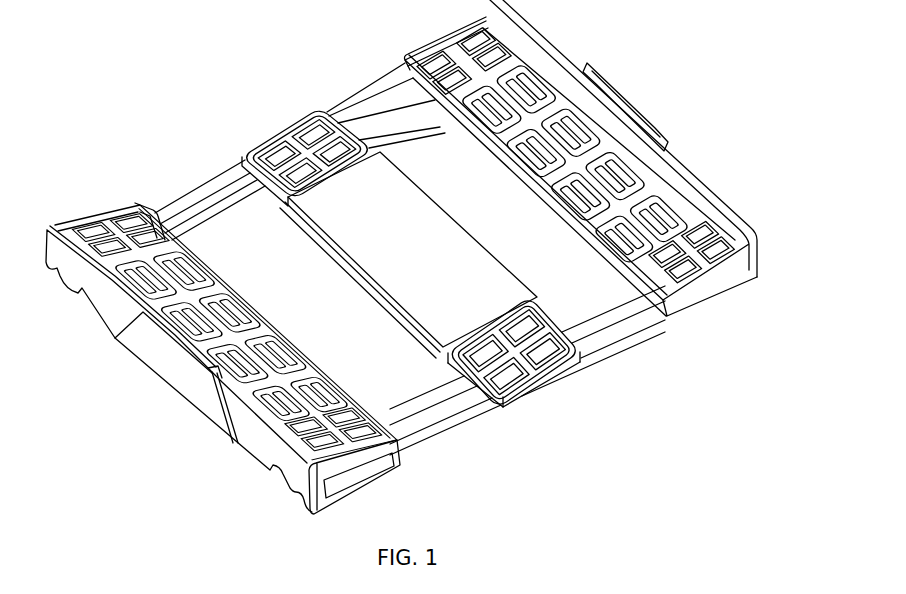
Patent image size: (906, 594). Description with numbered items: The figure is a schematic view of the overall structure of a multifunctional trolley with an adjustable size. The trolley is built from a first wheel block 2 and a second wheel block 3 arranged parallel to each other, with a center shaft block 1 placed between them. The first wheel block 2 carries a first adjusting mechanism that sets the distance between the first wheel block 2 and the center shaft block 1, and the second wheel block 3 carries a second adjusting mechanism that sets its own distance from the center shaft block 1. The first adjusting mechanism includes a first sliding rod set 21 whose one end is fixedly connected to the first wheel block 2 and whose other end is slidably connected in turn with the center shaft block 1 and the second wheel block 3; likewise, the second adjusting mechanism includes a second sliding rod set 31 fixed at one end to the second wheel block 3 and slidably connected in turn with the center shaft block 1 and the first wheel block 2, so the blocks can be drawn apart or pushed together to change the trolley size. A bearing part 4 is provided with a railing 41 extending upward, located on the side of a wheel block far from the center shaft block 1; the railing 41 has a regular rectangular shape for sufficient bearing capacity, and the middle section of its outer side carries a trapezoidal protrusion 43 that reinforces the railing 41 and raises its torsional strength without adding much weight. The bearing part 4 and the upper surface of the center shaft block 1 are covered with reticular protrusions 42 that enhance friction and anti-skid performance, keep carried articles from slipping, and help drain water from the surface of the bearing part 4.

The center shaft block 1 is at (258, 163).
The first wheel block 2 is at (117, 217).
The first sliding rod set 21 is at (210, 202).
The second wheel block 3 is at (403, 67).
The second sliding rod set 31 is at (405, 128).
The bearing part 4 is at (728, 287).
The railing 41 is at (105, 300).
The reticular protrusions 42 is at (622, 200).
The trapezoidal protrusion 43 is at (172, 365).